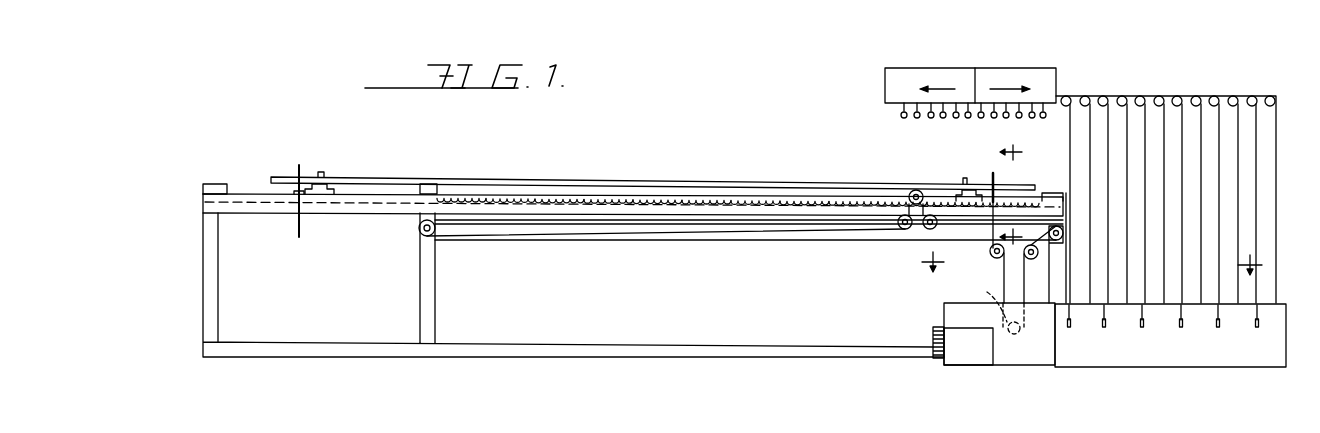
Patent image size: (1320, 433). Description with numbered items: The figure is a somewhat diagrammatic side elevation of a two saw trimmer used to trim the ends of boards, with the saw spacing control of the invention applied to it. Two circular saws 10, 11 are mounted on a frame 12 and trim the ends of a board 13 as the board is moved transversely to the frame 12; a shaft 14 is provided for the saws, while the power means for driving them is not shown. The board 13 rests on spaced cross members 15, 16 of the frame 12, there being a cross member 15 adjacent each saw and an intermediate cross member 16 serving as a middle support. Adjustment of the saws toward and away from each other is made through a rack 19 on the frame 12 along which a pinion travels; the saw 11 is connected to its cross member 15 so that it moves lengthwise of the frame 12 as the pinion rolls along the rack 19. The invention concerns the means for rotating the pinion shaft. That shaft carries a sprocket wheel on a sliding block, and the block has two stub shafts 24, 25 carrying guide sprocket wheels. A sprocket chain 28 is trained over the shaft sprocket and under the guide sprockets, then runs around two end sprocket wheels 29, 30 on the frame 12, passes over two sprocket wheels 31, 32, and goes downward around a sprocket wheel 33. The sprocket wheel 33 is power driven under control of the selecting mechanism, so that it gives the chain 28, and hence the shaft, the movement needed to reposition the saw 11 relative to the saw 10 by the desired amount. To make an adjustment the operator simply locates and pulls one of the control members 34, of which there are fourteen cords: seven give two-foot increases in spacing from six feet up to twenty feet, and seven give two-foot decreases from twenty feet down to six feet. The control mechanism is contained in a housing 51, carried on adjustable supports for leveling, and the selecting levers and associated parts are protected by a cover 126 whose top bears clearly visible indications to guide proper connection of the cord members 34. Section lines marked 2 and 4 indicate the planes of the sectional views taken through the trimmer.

The section line 2- 2 is at (1017, 195).
The section line 4- 4 is at (1092, 256).
The circular saw 10 is at (299, 165).
The circular saw 11 is at (992, 173).
The frame 12 is at (213, 183).
The board 13 is at (575, 180).
The shaft 14 is at (216, 204).
The cross member 15 is at (332, 188).
The cross member 16 is at (438, 186).
The rack 19 is at (726, 200).
The stub shaft 24 is at (902, 236).
The stub shaft 25 is at (926, 233).
The sprocket chain 28 is at (823, 243).
The end sprocket wheel 29 is at (422, 236).
The end sprocket wheel 30 is at (1062, 235).
The sprocket wheel 31 is at (992, 258).
The sprocket wheel 32 is at (1034, 259).
The sprocket wheel 33 is at (993, 310).
The control member 34 is at (1046, 118).
The housing 51 is at (1032, 362).
The cover 126 is at (1218, 362).